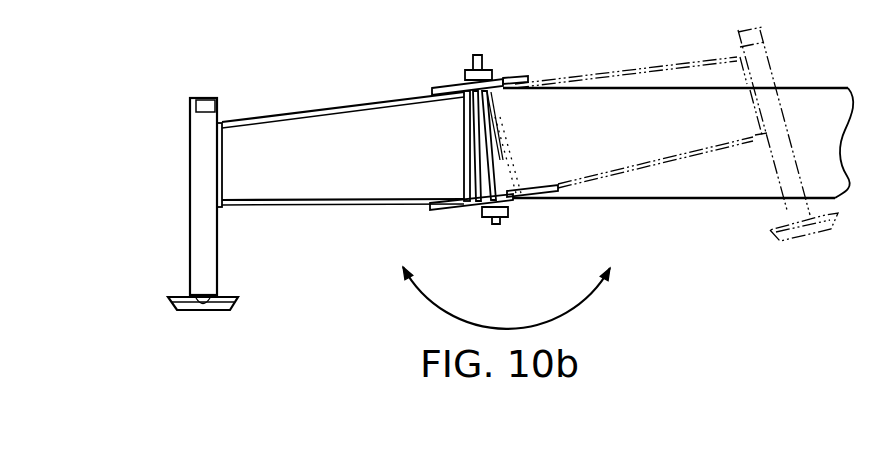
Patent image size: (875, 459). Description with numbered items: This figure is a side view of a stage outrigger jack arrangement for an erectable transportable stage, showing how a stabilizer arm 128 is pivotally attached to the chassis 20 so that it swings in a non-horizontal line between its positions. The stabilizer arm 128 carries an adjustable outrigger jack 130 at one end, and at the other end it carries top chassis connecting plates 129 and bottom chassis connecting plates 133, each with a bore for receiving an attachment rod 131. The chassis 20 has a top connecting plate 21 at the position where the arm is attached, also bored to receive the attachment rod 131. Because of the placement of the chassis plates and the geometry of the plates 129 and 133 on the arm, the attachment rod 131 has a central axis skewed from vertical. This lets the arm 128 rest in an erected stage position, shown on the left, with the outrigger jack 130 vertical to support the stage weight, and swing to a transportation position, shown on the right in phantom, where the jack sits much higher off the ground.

The chassis 20 is at (790, 88).
The top connecting plate 21 is at (503, 87).
The stabilizer arm 128 is at (387, 100).
The top chassis connecting plate 129 is at (457, 85).
The outrigger jack 130 is at (195, 178).
The attachment rod 131 is at (493, 163).
The bottom chassis connecting plate 133 is at (463, 210).